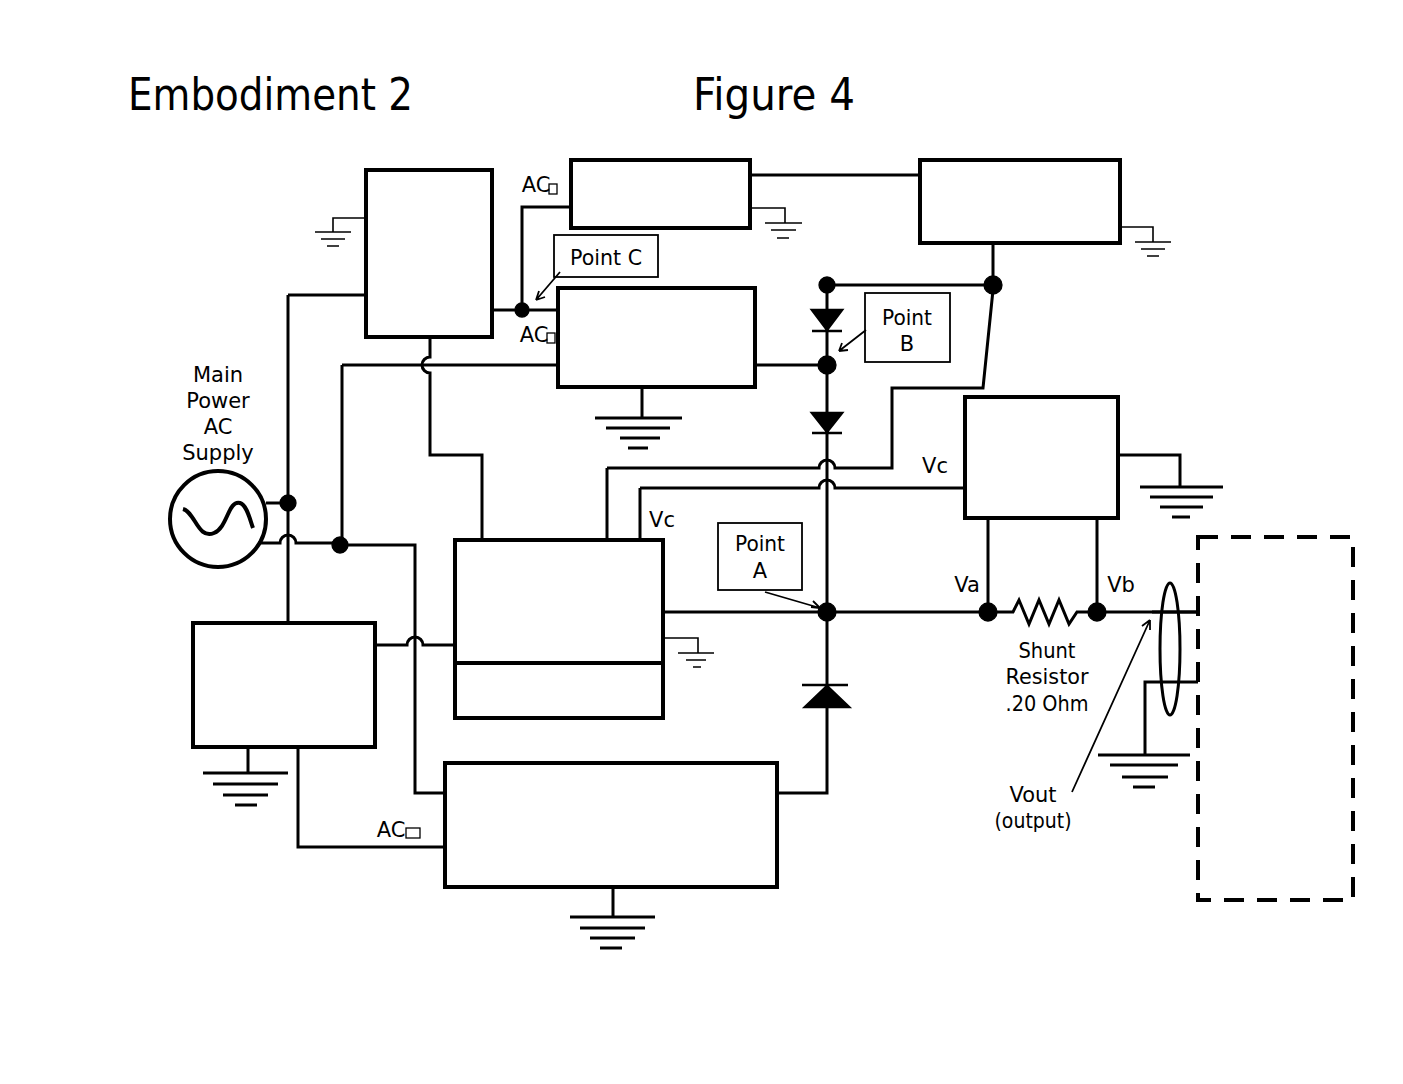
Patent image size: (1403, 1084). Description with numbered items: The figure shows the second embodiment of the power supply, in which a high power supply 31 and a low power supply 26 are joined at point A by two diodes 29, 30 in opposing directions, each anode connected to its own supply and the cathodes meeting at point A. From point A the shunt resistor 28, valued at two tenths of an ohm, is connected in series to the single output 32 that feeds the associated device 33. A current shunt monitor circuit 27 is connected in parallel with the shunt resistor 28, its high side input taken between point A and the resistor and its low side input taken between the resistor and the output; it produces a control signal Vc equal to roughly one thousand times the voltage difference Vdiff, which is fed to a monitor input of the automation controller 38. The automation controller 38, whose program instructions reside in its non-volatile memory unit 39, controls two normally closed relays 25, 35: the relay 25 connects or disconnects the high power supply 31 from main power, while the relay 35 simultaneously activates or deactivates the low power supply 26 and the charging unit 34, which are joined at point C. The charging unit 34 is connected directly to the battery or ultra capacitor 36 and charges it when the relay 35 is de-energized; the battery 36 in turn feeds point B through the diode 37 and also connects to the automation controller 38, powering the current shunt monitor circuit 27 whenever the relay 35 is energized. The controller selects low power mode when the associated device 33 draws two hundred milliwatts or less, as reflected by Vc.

The normally closed power relay 25 is at (269, 685).
The low power supply 26 is at (656, 323).
The current shunt monitor circuit 27 is at (1041, 443).
The shunt resistor 28 is at (1042, 601).
The diode 29 is at (806, 429).
The diode 30 is at (812, 698).
The high power supply 31 is at (611, 811).
The single output 32 is at (1109, 736).
The associated device 33 is at (1275, 718).
The charging unit 34 is at (660, 178).
The normally closed power relay 35 is at (429, 233).
The battery (or ultra capacitor) 36 is at (1020, 186).
The diode 37 is at (808, 324).
The automation controller 38 is at (559, 588).
The non-volatile memory unit 39 is at (579, 690).